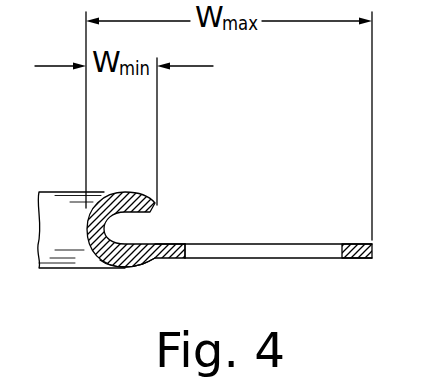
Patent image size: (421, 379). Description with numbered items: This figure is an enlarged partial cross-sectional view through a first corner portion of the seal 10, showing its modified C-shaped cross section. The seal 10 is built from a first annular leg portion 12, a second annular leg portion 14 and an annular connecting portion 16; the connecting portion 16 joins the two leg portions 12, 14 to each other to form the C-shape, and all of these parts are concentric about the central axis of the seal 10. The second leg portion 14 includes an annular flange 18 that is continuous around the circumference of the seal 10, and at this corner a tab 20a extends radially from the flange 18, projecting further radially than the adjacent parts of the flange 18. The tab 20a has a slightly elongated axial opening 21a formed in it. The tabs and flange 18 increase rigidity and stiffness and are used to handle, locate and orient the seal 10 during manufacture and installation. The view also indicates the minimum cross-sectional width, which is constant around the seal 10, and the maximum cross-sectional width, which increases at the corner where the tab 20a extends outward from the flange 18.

The seal 10 is at (205, 215).
The first annular leg portion 12 is at (122, 191).
The second annular leg portion 14 is at (127, 268).
The annular connecting portion 16 is at (84, 247).
The annular flange 18 is at (163, 243).
The tab 20a is at (355, 244).
The opening 21a is at (243, 252).